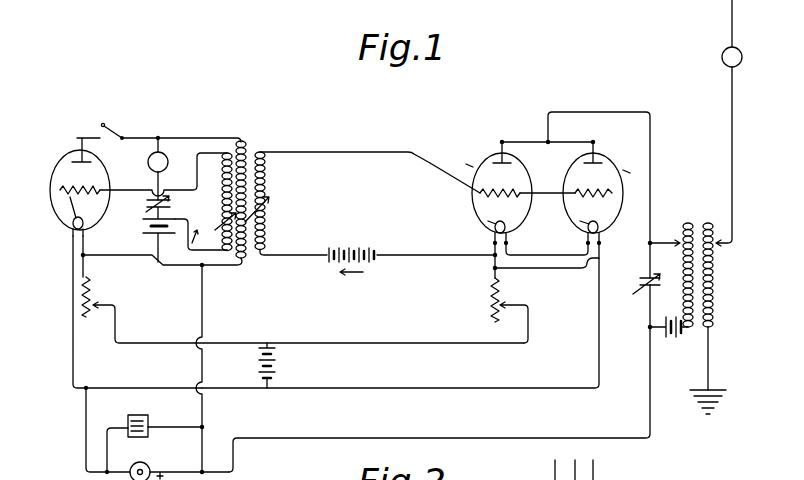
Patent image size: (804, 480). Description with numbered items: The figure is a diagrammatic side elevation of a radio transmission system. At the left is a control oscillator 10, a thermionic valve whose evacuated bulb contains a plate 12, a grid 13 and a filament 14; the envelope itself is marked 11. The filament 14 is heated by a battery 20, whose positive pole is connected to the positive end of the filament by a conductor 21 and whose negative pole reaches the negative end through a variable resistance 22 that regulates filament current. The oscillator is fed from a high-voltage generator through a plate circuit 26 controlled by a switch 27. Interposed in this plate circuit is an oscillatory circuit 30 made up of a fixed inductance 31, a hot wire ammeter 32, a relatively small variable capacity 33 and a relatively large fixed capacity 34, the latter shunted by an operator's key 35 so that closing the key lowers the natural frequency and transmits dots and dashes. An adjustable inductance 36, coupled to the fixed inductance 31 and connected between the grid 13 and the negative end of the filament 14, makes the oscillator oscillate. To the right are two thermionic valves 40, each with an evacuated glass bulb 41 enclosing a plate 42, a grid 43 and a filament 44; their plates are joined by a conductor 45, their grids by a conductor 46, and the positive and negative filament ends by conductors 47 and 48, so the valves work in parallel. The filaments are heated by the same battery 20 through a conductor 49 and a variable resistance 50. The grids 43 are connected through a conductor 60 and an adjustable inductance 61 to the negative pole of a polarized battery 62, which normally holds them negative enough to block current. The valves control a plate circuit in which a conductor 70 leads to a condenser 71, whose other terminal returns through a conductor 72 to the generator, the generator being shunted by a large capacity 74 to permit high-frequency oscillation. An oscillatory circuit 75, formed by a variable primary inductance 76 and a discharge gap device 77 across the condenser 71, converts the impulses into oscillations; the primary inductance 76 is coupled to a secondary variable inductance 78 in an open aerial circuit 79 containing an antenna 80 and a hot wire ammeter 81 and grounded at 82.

The control oscillator 10 is at (68, 190).
The grid 11 is at (52, 190).
The plate 12 is at (93, 160).
The grid 13 is at (70, 197).
The filament 14 is at (70, 227).
The battery 20 is at (276, 367).
The conductor 21 is at (72, 338).
The variable resistance 22 is at (93, 312).
The plate circuit 26 is at (134, 138).
The switch 27 is at (112, 127).
The oscillatory circuit 30 is at (187, 156).
The fixed inductance 31 is at (245, 146).
The hot wire ammeter 32 is at (166, 153).
The variable capacity 33 is at (172, 207).
The fixed capacity 34 is at (146, 232).
The operator's key 35 is at (201, 237).
The adjustable inductance 36 is at (220, 170).
The thermionic valves 40 is at (553, 182).
The evacuated glass bulb 41 is at (550, 168).
The plate 42 is at (549, 163).
The grid 43 is at (546, 203).
The filament 44 is at (488, 221).
The conductor 45 is at (574, 142).
The conductor 46 is at (555, 196).
The conductor 47 is at (547, 254).
The conductor 48 is at (544, 269).
The conductor 49 is at (400, 328).
The variable resistance 50 is at (489, 302).
The conductor 60 is at (338, 151).
The adjustable inductance 61 is at (267, 196).
The polarized battery 62 is at (377, 250).
The conductor 70 is at (651, 156).
The condenser 71 is at (640, 284).
The conductor 72 is at (439, 378).
The capacity 74 is at (127, 418).
The oscillatory circuit 75 is at (669, 300).
The variable primary inductance 76 is at (684, 258).
The discharge gap device 77 is at (674, 338).
The secondary variable inductance 78 is at (716, 267).
The open aerial circuit 79 is at (745, 156).
The antenna 80 is at (729, 24).
The hot wire ammeter 81 is at (742, 57).
The ground 82 is at (720, 403).